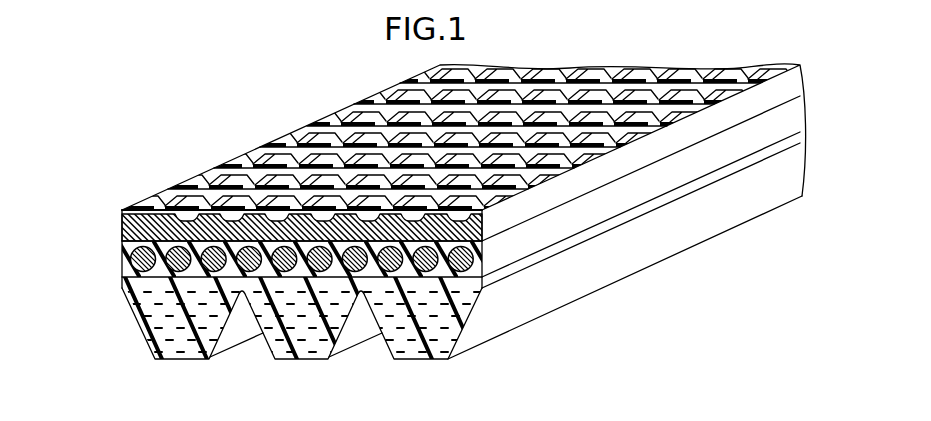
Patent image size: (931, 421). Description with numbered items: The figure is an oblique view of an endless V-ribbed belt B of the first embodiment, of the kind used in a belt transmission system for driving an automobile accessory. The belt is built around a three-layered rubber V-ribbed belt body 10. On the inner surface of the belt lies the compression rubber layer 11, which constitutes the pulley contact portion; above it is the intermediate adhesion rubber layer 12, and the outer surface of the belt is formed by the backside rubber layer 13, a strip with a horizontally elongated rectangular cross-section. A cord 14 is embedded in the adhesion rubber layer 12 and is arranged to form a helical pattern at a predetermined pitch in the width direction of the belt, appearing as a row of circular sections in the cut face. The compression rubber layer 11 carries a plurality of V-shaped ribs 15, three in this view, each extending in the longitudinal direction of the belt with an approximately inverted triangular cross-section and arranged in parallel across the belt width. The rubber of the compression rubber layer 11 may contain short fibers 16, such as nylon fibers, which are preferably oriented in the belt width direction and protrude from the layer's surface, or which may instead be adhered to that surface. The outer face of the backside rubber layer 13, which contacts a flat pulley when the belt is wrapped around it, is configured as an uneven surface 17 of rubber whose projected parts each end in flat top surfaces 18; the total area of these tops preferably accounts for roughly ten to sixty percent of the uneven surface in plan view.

The V-ribbed belt B is at (133, 176).
The V-ribbed belt body 10 is at (71, 208).
The compression rubber layer 11 is at (128, 303).
The adhesion rubber layer 12 is at (124, 266).
The backside rubber layer 13 is at (122, 229).
The cord 14 is at (207, 248).
The V-shaped ribs 15 is at (182, 361).
The short fibers 16 is at (452, 330).
The uneven surface 17 is at (397, 107).
The flat top surfaces 18 is at (318, 138).